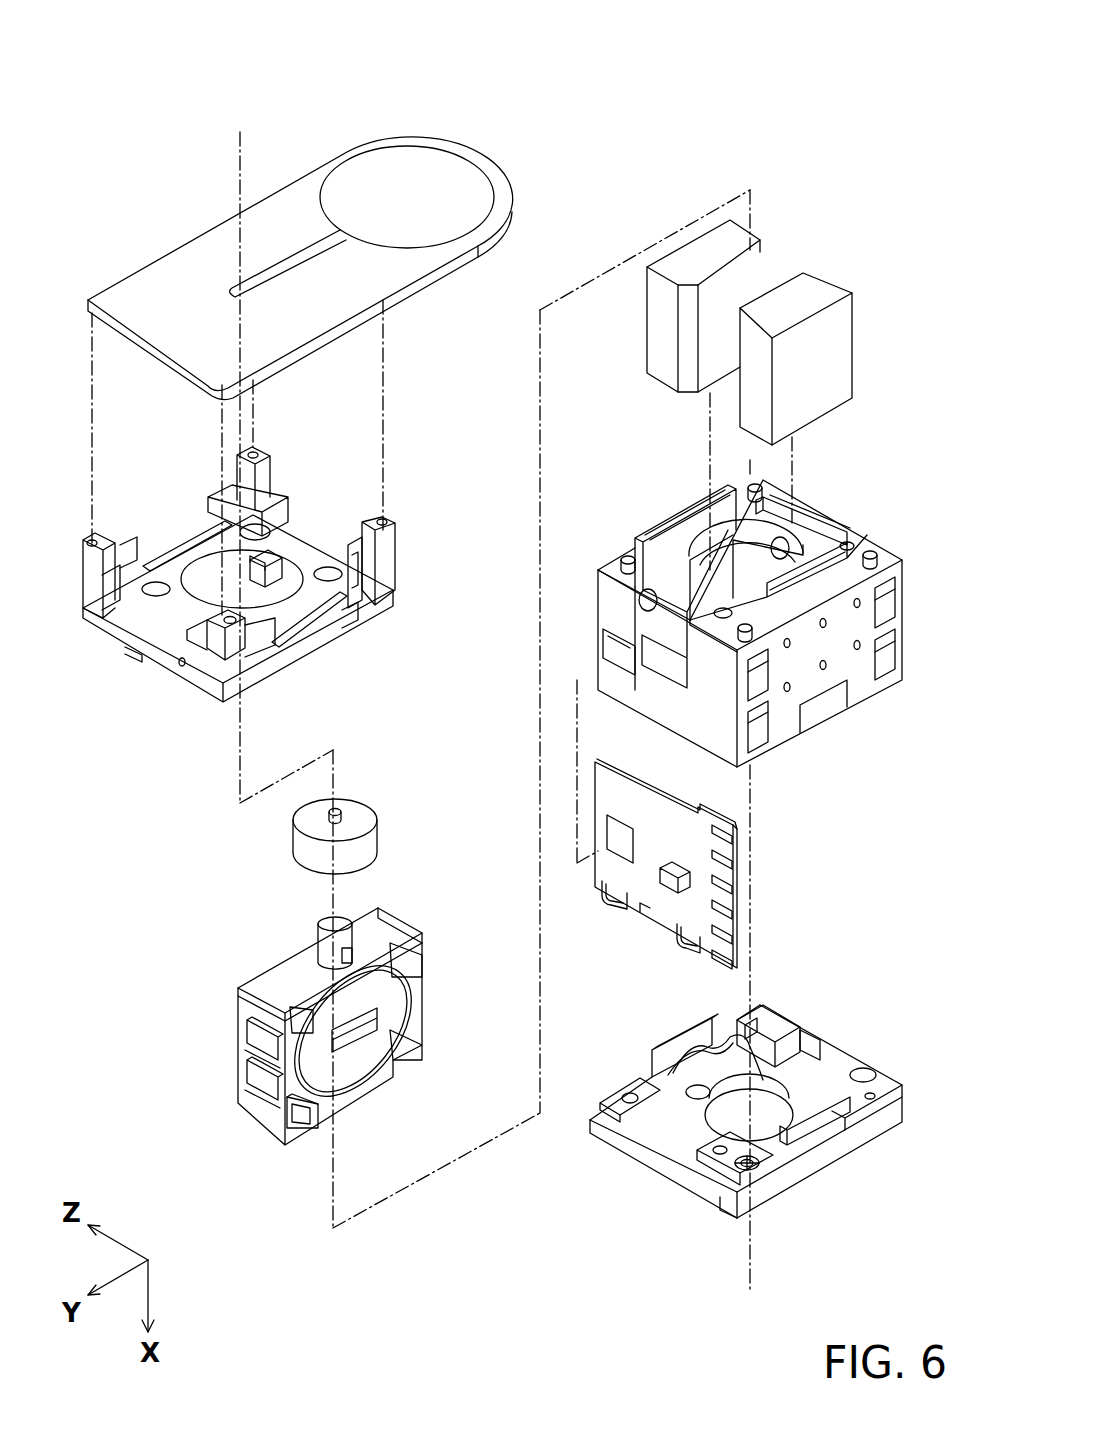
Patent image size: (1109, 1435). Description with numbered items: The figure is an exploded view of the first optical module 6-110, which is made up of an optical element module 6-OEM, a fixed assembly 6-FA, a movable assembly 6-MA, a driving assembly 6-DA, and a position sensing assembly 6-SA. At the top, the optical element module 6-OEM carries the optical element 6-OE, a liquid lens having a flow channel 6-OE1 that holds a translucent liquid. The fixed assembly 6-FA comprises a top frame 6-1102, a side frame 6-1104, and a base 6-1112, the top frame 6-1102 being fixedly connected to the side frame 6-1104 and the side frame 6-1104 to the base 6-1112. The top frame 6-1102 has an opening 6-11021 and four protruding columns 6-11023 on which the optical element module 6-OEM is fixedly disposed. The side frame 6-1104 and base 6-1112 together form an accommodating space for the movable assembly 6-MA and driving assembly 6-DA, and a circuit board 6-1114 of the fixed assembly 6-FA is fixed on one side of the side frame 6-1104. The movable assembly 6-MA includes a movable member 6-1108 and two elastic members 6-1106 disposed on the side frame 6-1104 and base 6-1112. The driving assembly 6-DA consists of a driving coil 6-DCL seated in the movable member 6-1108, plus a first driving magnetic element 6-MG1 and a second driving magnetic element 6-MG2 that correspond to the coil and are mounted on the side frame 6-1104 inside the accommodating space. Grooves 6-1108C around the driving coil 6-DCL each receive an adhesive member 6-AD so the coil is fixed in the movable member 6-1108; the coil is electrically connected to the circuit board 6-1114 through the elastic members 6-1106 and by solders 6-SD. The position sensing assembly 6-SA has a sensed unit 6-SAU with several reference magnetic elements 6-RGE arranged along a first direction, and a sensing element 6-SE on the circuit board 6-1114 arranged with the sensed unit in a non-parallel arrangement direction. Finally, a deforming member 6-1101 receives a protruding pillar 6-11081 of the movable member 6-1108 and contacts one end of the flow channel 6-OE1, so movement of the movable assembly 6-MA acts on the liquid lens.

The first optical module 6-110 is at (142, 35).
The optical element module 6-OEM is at (205, 217).
The optical element 6-OE is at (405, 195).
The flow channel 6-OE1 is at (277, 277).
The top frame 6-1102 is at (395, 567).
The opening 6-11021 is at (277, 553).
The protruding columns 6-11023 is at (110, 542).
The deforming member 6-1101 is at (378, 833).
The movable member 6-1108 is at (260, 980).
The protruding pillar 6-11081 is at (320, 940).
The grooves 6-1108C is at (282, 1115).
The driving coil 6-DCL is at (357, 1055).
The adhesive member 6-AD is at (420, 1042).
The sensed unit 6-SAU is at (169, 1048).
The reference magnetic elements 6-RGE is at (252, 1033).
The first driving magnetic element 6-MG1 is at (667, 358).
The second driving magnetic element 6-MG2 is at (802, 300).
The side frame 6-1104 is at (862, 533).
The circuit board 6-1114 is at (672, 842).
The sensing element 6-SE is at (697, 887).
The solders 6-SD is at (610, 897).
The base 6-1112 is at (858, 1063).
The elastic members 6-1106 is at (622, 1103).
The movable assembly 6-MA is at (640, 8).
The fixed assembly 6-FA is at (640, 87).
The driving assembly 6-DA is at (840, 8).
The position sensing assembly 6-SA is at (840, 110).